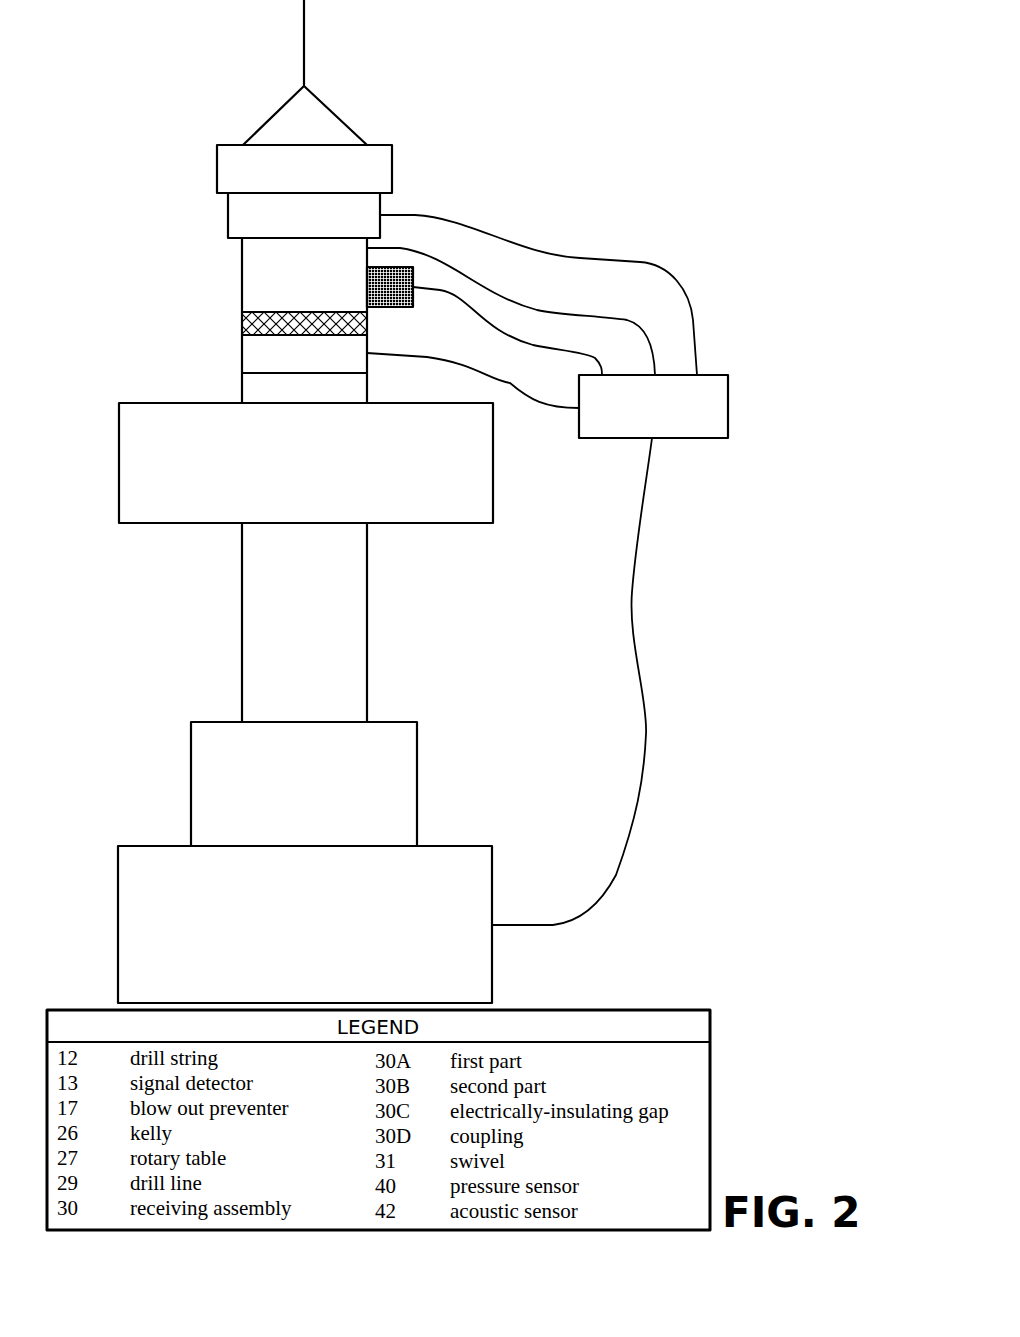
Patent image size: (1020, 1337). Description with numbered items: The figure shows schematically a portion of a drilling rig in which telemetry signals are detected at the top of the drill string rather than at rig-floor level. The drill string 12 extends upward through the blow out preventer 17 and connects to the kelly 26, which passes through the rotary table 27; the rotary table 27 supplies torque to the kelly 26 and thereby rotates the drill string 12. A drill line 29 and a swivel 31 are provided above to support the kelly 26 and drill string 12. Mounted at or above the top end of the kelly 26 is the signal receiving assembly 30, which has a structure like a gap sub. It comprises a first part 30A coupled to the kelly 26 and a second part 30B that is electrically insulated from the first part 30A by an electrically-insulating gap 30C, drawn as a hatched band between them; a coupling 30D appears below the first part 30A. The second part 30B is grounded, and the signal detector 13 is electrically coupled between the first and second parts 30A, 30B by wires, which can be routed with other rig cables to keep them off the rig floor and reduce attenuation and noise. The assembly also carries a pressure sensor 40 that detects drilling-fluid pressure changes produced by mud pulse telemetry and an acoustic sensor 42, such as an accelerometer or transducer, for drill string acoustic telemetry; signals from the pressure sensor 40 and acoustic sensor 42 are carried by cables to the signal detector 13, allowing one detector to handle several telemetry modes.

The drill string 12 is at (190, 735).
The signal detector 13 is at (626, 438).
The blow out preventer 17 is at (161, 897).
The kelly 26 is at (267, 672).
The rotary table 27 is at (146, 460).
The drill line 29 is at (304, 52).
The signal receiving assembly 30 is at (164, 72).
The first part 30A is at (268, 352).
The second part 30B is at (263, 255).
The electrically-insulating gap 30C is at (255, 322).
The coupling 30D is at (268, 390).
The swivel 31 is at (260, 180).
The pressure sensor 40 is at (363, 205).
The acoustic sensor 42 is at (387, 307).